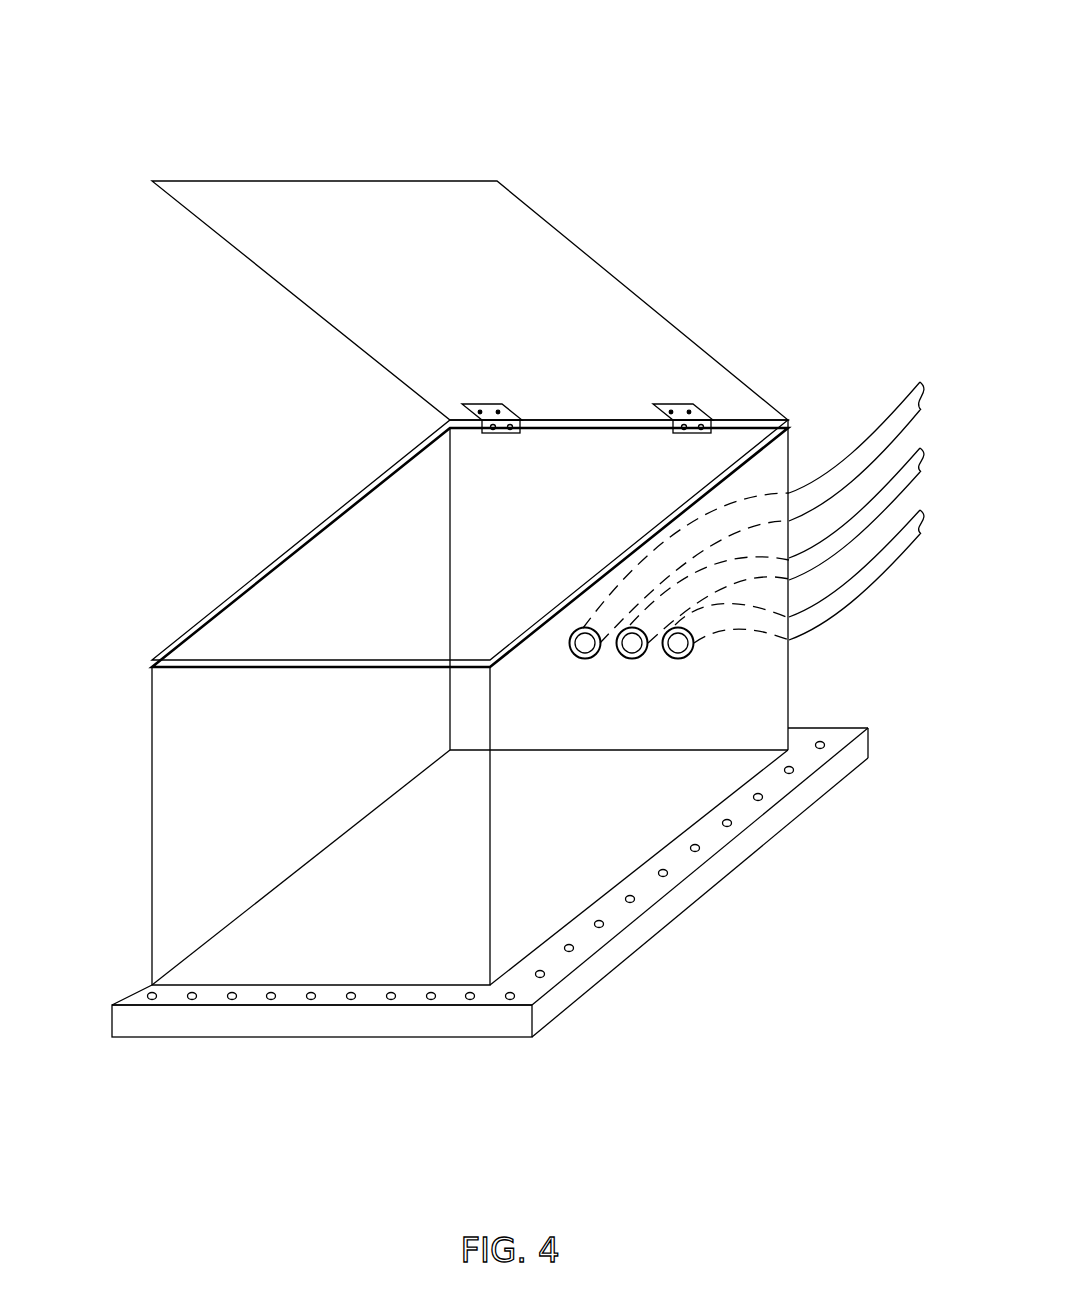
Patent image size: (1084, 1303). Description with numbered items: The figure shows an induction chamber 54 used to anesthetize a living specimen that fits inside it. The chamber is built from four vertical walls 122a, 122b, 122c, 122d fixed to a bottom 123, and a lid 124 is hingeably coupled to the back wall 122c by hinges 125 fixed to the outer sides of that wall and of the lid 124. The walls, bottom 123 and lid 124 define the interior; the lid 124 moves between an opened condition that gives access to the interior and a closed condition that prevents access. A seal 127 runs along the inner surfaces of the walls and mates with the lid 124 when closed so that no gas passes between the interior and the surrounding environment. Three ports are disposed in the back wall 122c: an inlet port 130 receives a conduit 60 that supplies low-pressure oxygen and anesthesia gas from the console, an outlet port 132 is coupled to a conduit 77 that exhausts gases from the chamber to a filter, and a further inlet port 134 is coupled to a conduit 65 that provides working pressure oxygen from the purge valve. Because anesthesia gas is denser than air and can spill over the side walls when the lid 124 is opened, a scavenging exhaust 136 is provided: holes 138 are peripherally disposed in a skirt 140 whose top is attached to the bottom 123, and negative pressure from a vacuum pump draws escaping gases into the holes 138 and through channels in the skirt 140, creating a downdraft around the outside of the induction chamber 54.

The induction chamber 54 is at (233, 79).
The lid 124 is at (530, 262).
The hinges 125 is at (483, 403).
The seal 127 is at (252, 582).
The vertical wall 122a is at (470, 948).
The vertical wall 122b is at (560, 885).
The back wall 122c is at (733, 448).
The vertical wall 122d is at (332, 592).
The bottom 123 is at (600, 860).
The scavenging exhaust 136 is at (132, 1017).
The skirt 140 is at (252, 1020).
The holes 138 is at (350, 1000).
The conduit 60 is at (888, 413).
The conduit 77 is at (903, 467).
The conduit 65 is at (868, 557).
The inlet port 130 is at (585, 643).
The outlet port 132 is at (632, 643).
The inlet port 134 is at (678, 643).